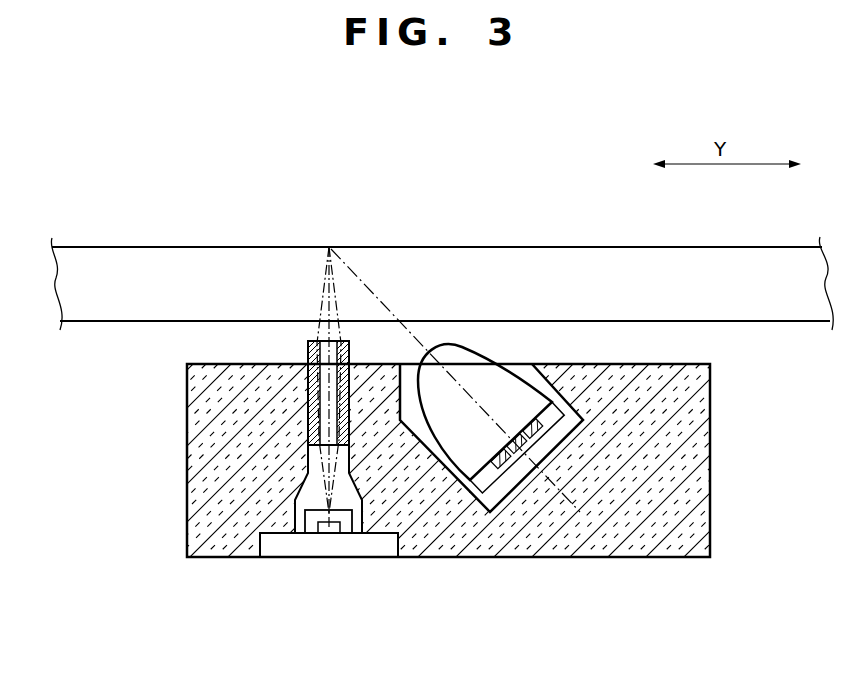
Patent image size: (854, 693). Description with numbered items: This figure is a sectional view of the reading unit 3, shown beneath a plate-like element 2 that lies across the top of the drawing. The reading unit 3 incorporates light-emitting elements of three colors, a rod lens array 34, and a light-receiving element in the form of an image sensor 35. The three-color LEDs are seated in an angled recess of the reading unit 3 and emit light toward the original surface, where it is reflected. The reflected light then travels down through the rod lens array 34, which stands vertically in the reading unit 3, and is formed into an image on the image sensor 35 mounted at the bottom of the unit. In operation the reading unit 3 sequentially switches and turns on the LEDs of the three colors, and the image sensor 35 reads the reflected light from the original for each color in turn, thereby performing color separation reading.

The light guide plate 2 is at (538, 268).
The reading unit 3 is at (650, 518).
The rod lens array 34 is at (310, 393).
The light-receiving element (image sensor) 35 is at (331, 541).